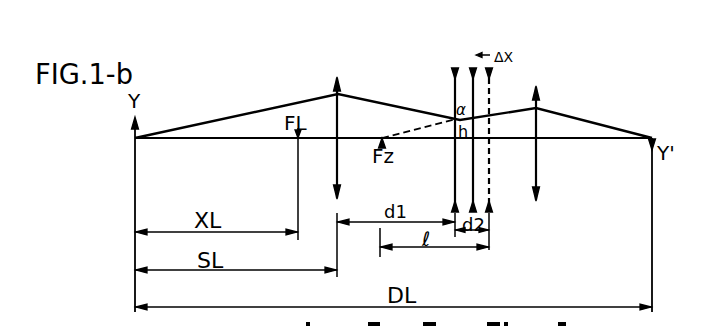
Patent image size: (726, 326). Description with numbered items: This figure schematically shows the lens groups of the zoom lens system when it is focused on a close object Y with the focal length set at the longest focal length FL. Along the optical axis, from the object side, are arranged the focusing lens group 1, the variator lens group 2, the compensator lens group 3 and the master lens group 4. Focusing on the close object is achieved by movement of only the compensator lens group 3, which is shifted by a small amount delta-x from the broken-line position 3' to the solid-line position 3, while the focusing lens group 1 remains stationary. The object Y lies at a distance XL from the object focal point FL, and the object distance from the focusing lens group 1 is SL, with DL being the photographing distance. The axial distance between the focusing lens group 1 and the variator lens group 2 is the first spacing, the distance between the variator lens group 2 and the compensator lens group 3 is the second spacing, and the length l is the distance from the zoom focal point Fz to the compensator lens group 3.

The focusing lens group 1 is at (337, 78).
The variator lens group 2 is at (455, 68).
The compensator lens group 3 is at (470, 119).
The compensator lens group (broken-line position) 3' is at (513, 106).
The master lens group 4 is at (536, 87).